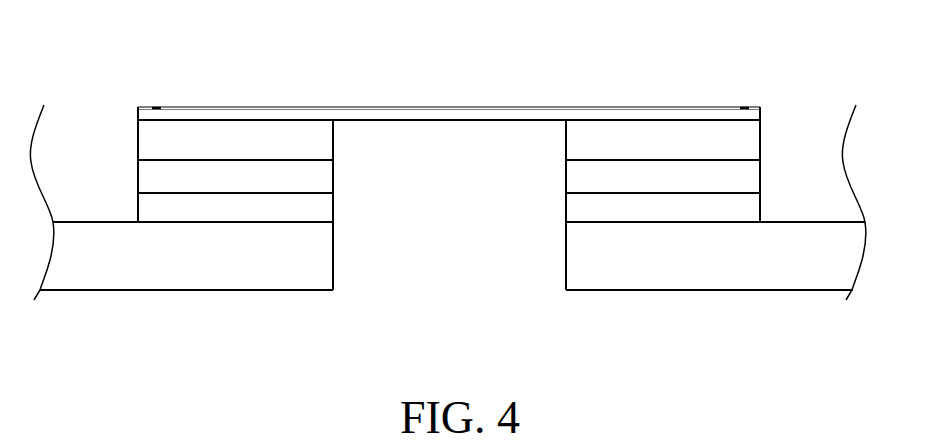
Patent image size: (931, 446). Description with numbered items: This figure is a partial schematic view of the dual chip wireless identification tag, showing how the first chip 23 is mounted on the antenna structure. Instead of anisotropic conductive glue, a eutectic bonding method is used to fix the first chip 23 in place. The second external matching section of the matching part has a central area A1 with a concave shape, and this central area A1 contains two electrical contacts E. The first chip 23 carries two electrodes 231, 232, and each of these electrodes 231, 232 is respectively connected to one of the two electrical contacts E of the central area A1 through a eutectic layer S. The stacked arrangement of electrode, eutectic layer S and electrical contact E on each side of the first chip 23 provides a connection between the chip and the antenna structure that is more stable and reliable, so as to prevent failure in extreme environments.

The first chip 23 is at (657, 97).
The electrode 231 is at (148, 138).
The electrode 232 is at (750, 139).
The eutectic layer S is at (148, 174).
The electrical contact E is at (148, 204).
The central area A1 is at (758, 302).